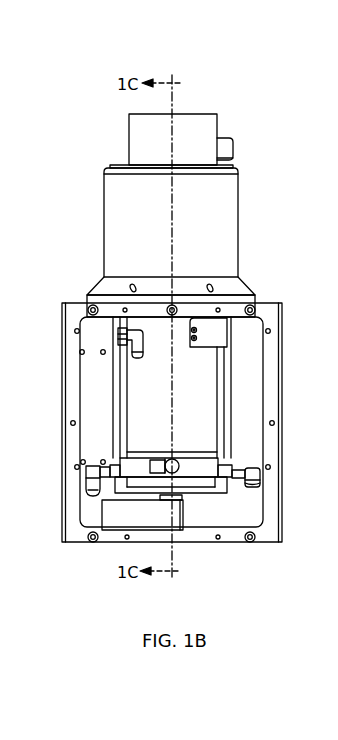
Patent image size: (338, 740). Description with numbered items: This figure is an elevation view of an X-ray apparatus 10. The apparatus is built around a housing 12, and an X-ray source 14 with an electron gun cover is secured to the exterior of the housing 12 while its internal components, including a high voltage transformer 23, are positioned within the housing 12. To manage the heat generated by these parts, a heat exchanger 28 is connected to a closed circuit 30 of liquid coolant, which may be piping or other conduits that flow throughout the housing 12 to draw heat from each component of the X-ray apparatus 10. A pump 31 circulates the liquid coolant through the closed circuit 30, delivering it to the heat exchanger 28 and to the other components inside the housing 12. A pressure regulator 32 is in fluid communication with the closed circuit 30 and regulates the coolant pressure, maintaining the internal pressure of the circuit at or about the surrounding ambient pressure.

The X-ray apparatus 10 is at (243, 75).
The X-ray source 14 is at (231, 147).
The housing 12 is at (283, 352).
The pressure regulator 32 is at (253, 328).
The heat exchanger 28 is at (90, 383).
The pump 31 is at (213, 328).
The closed circuit 30 is at (258, 475).
The high voltage transformer 23 is at (177, 520).